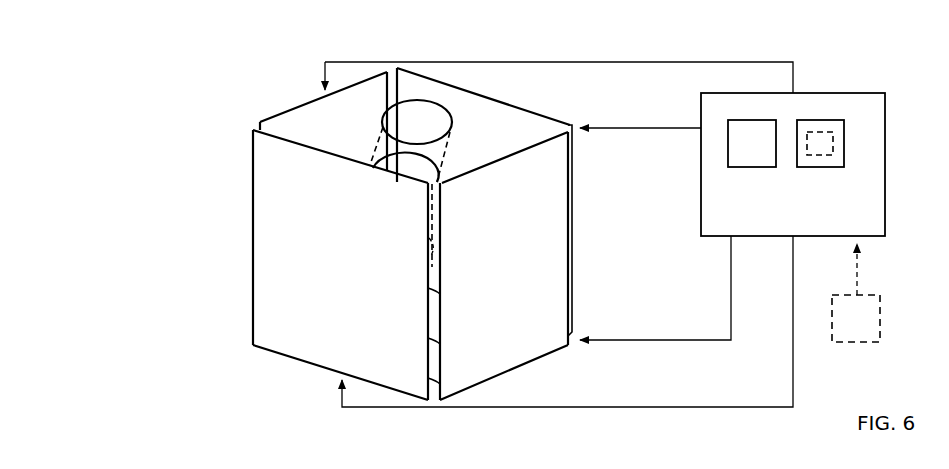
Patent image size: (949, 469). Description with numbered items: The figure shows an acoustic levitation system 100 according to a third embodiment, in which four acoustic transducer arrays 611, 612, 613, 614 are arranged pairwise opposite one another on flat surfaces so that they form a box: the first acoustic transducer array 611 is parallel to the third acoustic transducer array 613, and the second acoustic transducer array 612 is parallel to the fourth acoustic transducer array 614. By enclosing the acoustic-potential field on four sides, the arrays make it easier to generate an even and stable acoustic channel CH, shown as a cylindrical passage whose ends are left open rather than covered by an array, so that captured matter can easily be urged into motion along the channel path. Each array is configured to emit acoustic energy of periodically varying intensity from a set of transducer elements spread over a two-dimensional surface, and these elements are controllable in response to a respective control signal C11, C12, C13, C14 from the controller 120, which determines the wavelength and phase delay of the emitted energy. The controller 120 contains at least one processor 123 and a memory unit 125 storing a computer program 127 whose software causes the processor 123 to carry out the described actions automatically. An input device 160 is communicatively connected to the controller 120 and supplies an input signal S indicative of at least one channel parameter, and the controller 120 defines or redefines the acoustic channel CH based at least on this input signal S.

The acoustic levitation system 100 is at (232, 42).
The controller 120 is at (822, 139).
The processor 123 is at (750, 167).
The memory 125 is at (820, 167).
The computer program 127 is at (833, 142).
The input device 160 is at (880, 318).
The first acoustic transducer array 611 is at (567, 118).
The second acoustic transducer array 612 is at (306, 101).
The third acoustic transducer array 613 is at (253, 194).
The fourth acoustic transducer array 614 is at (572, 214).
The acoustic channel CH is at (438, 92).
The control signal C11 is at (640, 114).
The control signal C12 is at (559, 62).
The control signal C13 is at (569, 321).
The control signal C14 is at (655, 288).
The input signal S is at (846, 269).